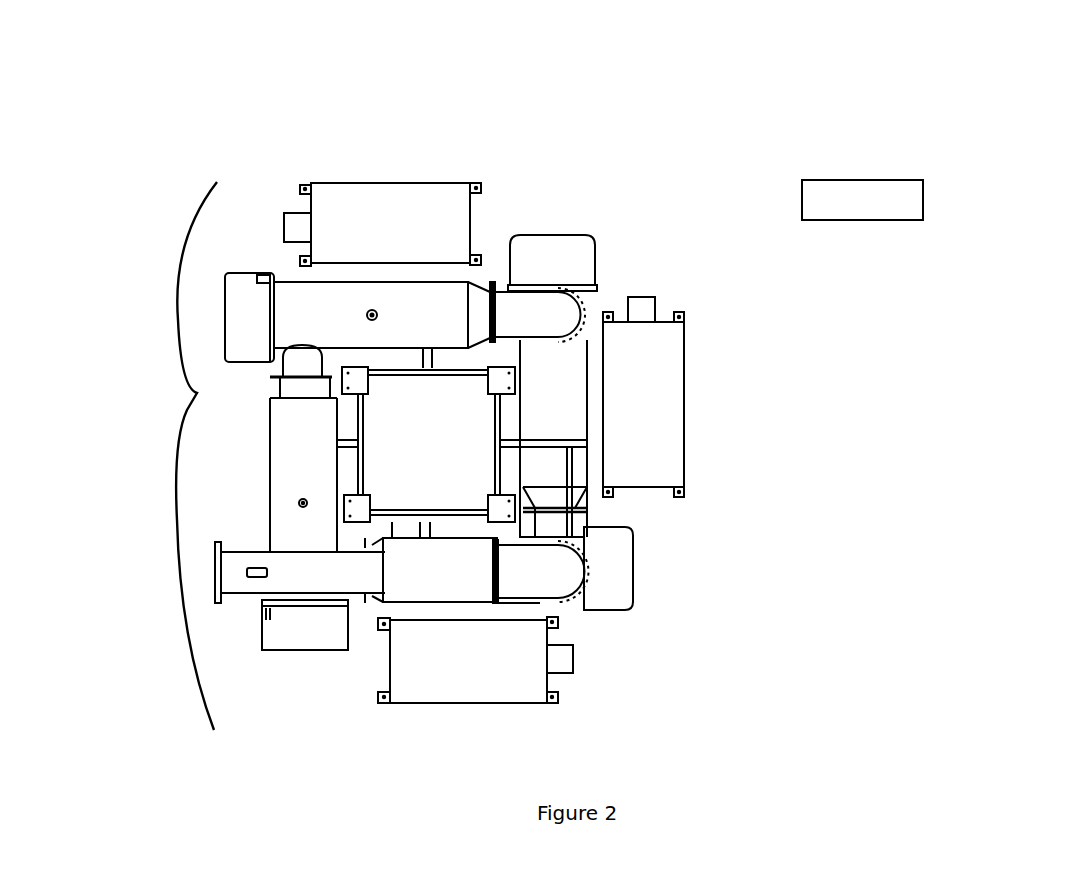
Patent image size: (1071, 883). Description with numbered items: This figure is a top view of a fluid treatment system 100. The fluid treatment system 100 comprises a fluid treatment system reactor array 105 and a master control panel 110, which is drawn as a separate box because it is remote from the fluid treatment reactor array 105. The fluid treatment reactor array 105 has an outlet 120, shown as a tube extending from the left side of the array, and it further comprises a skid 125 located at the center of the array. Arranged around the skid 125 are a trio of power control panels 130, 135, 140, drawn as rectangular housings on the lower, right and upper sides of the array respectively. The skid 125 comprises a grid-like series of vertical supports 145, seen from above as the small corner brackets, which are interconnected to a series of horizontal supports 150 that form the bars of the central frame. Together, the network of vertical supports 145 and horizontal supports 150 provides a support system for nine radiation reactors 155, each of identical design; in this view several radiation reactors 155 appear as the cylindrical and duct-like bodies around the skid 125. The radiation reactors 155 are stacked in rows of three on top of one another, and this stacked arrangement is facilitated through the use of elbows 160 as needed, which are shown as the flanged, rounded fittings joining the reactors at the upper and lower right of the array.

The fluid treatment system 100 is at (616, 115).
The fluid treatment system reactor array 105 is at (172, 456).
The master control panel 110 is at (866, 176).
The outlet 120 is at (217, 608).
The skid 125 is at (445, 388).
The power control panel 130 is at (470, 678).
The power control panel 135 is at (660, 416).
The power control panel 140 is at (362, 240).
The vertical supports 145 is at (352, 505).
The horizontal supports 150 is at (410, 370).
The radiation reactors 155 is at (328, 330).
The elbows 160 is at (550, 324).